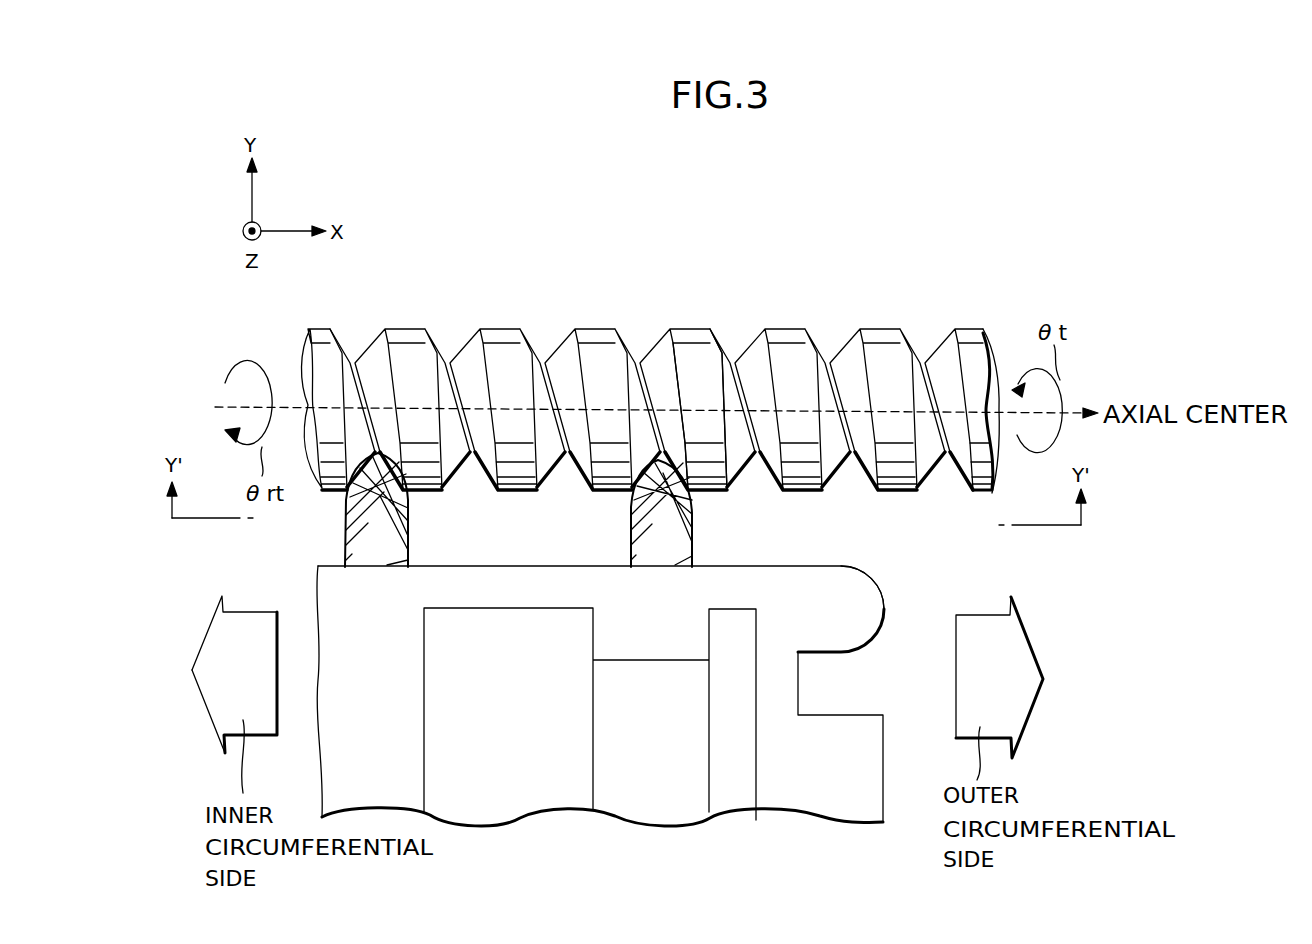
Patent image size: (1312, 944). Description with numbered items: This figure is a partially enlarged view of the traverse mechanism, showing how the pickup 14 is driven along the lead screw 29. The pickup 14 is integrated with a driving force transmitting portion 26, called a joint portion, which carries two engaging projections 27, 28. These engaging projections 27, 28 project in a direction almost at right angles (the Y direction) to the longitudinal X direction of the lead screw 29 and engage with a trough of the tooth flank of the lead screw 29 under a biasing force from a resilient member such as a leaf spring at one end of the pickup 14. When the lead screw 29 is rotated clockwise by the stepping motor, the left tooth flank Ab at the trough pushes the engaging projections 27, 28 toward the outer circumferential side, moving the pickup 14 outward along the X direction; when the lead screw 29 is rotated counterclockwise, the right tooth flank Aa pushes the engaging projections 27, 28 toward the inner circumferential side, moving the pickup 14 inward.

The pickup 14 is at (501, 806).
The driving force transmitting portion 26 is at (858, 587).
The engaging projection 27 is at (345, 549).
The engaging projection 28 is at (631, 549).
The lead screw 29 is at (972, 350).
The right tooth flank Aa is at (668, 430).
The left tooth flank Ab is at (637, 428).